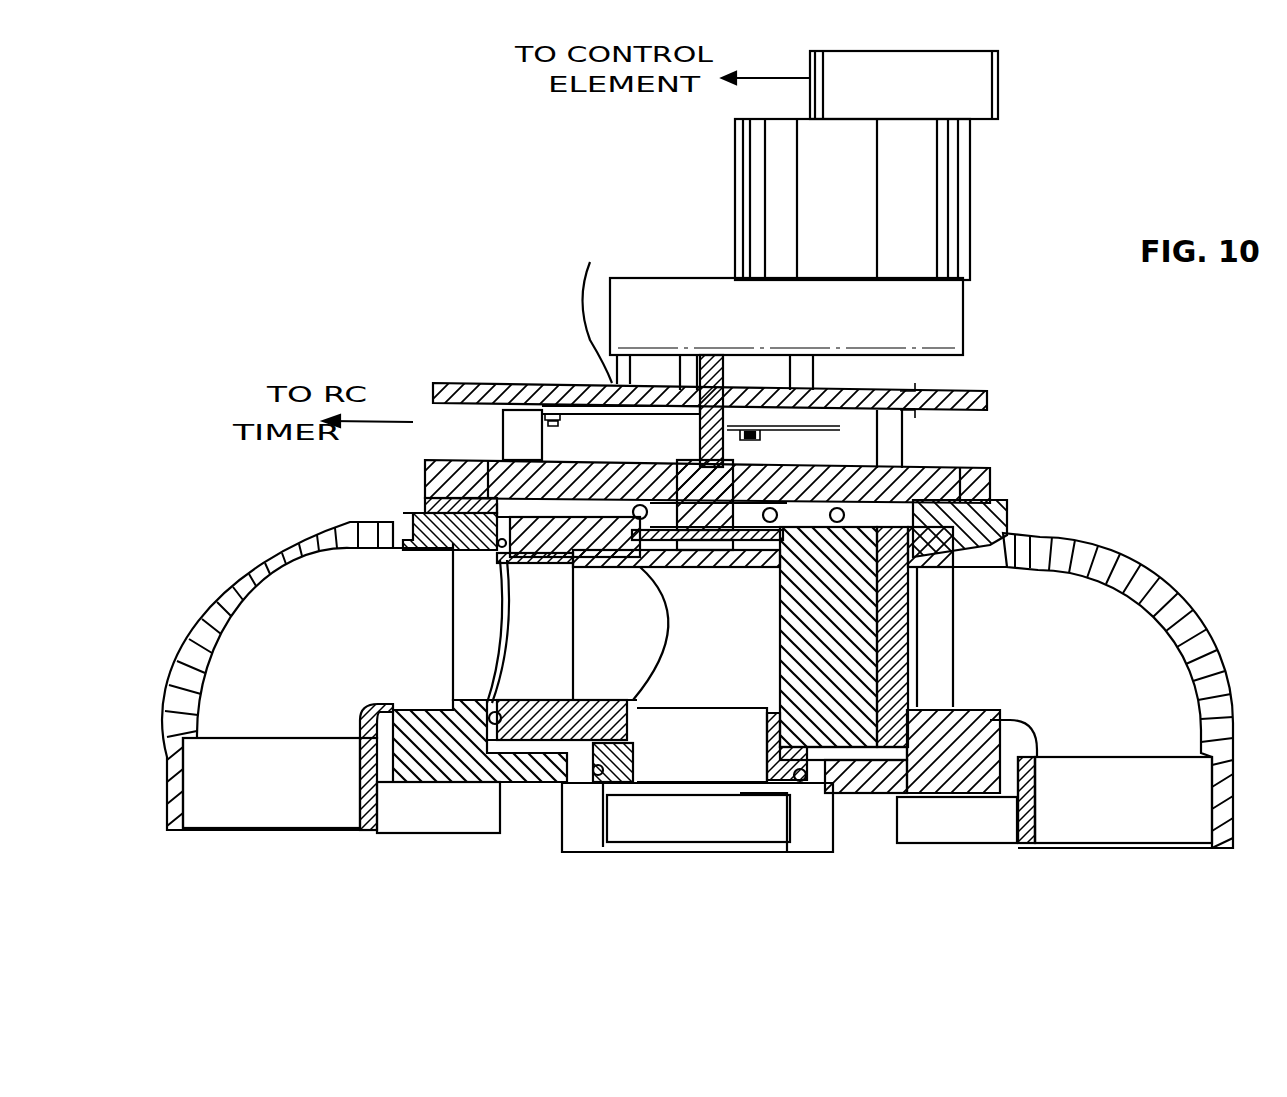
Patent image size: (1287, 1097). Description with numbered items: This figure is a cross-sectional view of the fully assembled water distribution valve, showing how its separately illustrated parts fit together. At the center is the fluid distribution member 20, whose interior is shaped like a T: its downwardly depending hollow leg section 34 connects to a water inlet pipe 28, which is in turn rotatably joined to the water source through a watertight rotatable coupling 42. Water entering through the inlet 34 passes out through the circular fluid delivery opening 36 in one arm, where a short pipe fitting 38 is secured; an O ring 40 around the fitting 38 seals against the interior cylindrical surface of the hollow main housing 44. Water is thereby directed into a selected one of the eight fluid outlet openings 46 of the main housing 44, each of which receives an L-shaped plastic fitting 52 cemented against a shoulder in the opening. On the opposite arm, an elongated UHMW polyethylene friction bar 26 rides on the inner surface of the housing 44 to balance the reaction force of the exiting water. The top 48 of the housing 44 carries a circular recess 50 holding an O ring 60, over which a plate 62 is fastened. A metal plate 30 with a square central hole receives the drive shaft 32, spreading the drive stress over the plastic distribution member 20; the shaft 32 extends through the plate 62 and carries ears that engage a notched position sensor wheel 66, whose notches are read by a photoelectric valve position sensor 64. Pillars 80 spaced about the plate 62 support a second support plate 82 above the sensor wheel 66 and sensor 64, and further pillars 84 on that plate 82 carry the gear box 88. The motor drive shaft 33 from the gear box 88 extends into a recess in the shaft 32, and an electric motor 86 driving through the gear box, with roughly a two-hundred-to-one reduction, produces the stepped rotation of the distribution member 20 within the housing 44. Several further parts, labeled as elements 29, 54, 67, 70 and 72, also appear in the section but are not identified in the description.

The fluid distribution member 20 is at (848, 722).
The friction bar 26 is at (893, 633).
The water inlet pipe 28 is at (640, 762).
The retaining tab 29 is at (583, 790).
The metal plate 30 is at (765, 585).
The drive shaft 32 is at (757, 478).
The motor drive shaft 33 is at (723, 382).
The hollow leg section 34 is at (780, 665).
The fluid delivery opening 36 is at (605, 568).
The fitting 38 is at (532, 565).
The O ring 40 is at (453, 560).
The watertight rotatable coupling 42 is at (693, 820).
The main housing 44 is at (955, 705).
The fluid outlet openings 46 is at (1030, 540).
The top of main cylindrical housing 48 is at (433, 483).
The circular recess 50 is at (997, 490).
The plastic fitting 52 is at (227, 580).
The bottom plate 54 is at (818, 783).
The O ring 60 is at (503, 423).
The plate 62 is at (990, 468).
The valve position sensor 64 is at (520, 438).
The position sensor wheel 66 is at (903, 388).
The cam plate 67 is at (790, 425).
The seal plate 70 is at (800, 517).
The o-ring 72 is at (640, 505).
The pillars 80 is at (906, 444).
The support plate 82 is at (470, 380).
The pillars 84 is at (593, 303).
The electric motor 86 is at (948, 175).
The gear box 88 is at (940, 297).